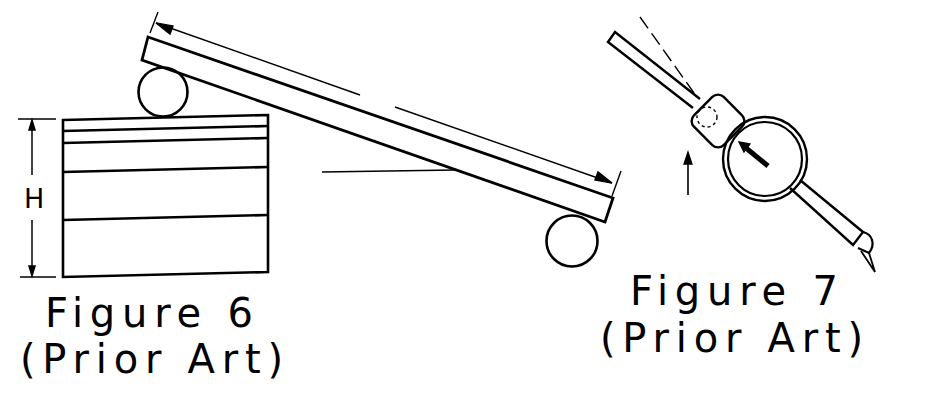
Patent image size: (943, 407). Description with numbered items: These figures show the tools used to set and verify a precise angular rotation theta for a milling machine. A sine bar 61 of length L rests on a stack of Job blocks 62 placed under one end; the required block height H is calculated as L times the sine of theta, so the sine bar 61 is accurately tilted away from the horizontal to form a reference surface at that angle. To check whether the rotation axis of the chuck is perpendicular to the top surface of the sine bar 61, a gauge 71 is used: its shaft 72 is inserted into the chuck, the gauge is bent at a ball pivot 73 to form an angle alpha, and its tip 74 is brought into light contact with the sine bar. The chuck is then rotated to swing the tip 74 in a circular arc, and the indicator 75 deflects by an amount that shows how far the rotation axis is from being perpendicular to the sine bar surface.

In FIG. 6, the sine bar 61 is at (395, 137).
In FIG. 6, the Job blocks 62 is at (277, 120).
In FIG. 7, the indicator gauge 71 is at (693, 192).
In FIG. 7, the shaft 72 is at (630, 53).
In FIG. 7, the ball pivot 73 is at (692, 122).
In FIG. 7, the tip 74 is at (865, 262).
In FIG. 7, the indicator 75 is at (753, 148).